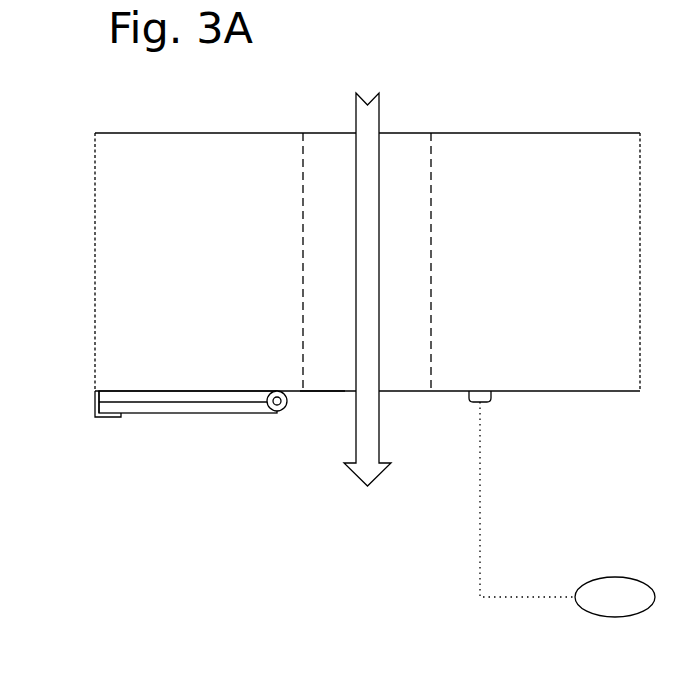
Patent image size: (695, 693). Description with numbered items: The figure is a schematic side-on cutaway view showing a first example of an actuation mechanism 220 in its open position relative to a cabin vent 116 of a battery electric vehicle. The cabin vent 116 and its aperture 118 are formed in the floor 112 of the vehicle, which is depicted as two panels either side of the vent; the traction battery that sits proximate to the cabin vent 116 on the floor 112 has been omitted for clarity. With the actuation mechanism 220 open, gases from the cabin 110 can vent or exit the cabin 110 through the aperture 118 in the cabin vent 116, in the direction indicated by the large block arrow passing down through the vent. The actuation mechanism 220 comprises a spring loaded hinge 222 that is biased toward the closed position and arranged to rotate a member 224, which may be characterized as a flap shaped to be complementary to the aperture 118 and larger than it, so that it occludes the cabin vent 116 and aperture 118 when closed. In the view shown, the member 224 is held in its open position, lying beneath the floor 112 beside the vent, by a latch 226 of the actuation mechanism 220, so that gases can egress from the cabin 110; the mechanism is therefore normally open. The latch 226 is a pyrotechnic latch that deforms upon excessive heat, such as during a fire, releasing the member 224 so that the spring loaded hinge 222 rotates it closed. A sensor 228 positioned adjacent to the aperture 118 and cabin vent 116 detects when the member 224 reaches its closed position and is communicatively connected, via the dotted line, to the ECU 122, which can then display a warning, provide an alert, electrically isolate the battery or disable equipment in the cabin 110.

The cabin 110 is at (350, 86).
The floor 112 is at (175, 240).
The cabin vent 116 is at (412, 199).
The aperture 118 is at (322, 401).
The ECU 122 is at (613, 577).
The actuation mechanism 220 is at (155, 465).
The spring loaded hinge 222 is at (277, 411).
The member 224 is at (148, 413).
The latch 226 is at (98, 402).
The sensor 228 is at (490, 400).